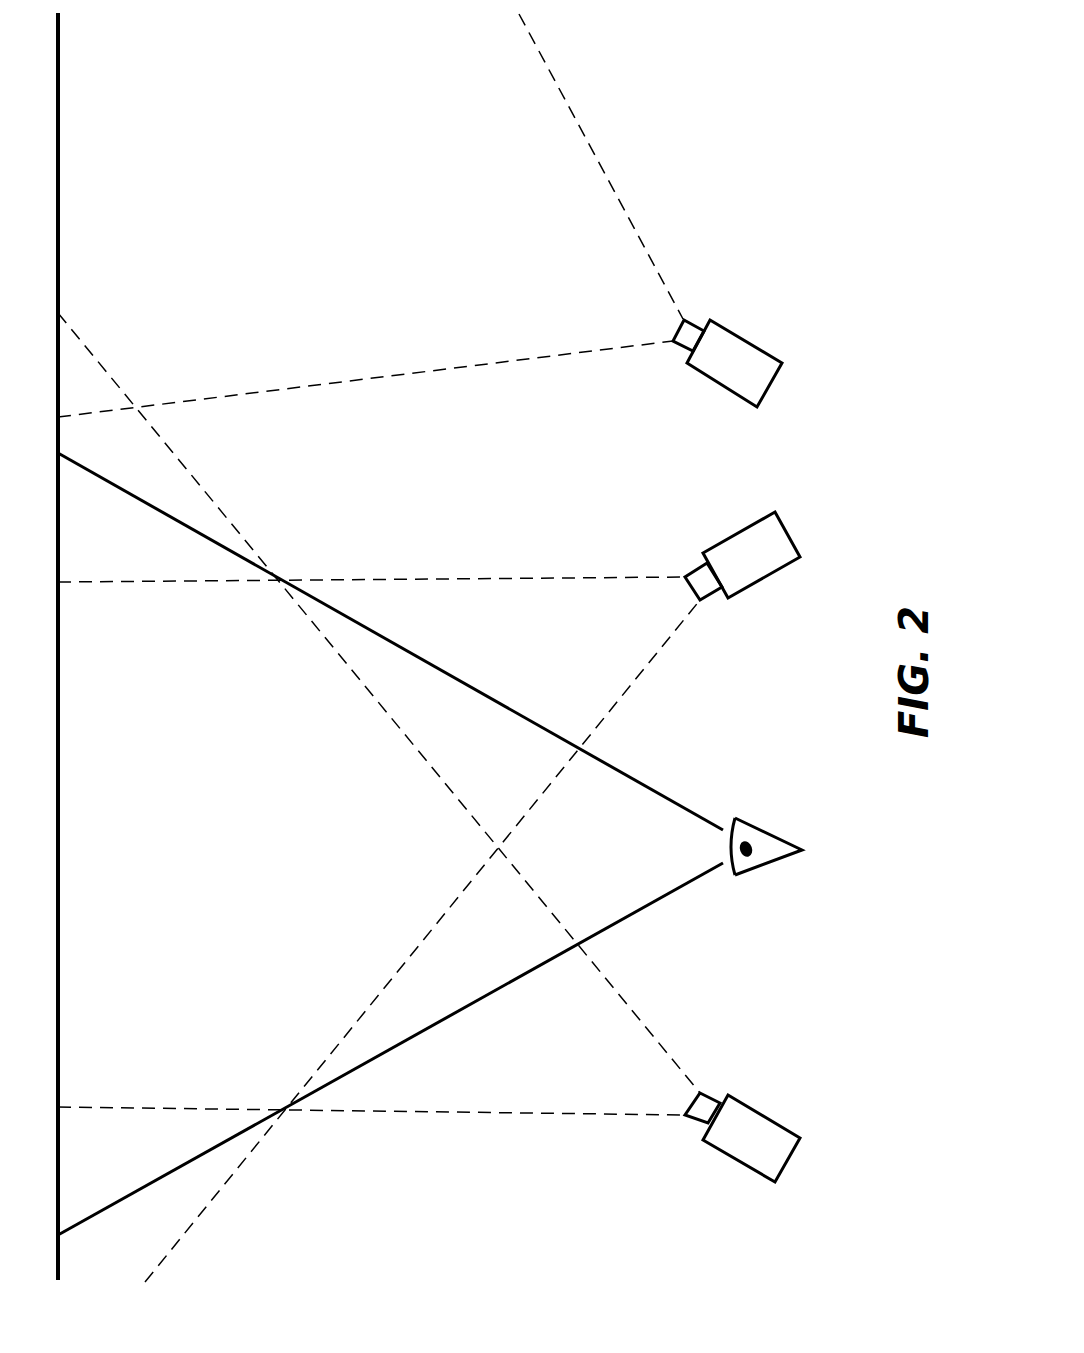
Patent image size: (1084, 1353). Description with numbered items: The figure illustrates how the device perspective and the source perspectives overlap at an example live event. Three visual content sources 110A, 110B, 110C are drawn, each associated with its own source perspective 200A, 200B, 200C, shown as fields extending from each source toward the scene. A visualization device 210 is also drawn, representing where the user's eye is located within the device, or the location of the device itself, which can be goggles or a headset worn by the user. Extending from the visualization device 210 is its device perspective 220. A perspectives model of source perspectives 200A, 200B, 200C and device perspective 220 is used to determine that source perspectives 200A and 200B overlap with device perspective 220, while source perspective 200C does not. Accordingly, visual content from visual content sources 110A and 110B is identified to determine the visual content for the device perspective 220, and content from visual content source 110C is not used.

The visual content source 110A is at (774, 1110).
The visual content source 110B is at (734, 530).
The visual content source 110C is at (754, 336).
The source perspective 200A is at (379, 714).
The source perspective 200B is at (379, 929).
The source perspective 200C is at (370, 215).
The visualization device 210 is at (786, 830).
The device perspective 220 is at (390, 844).